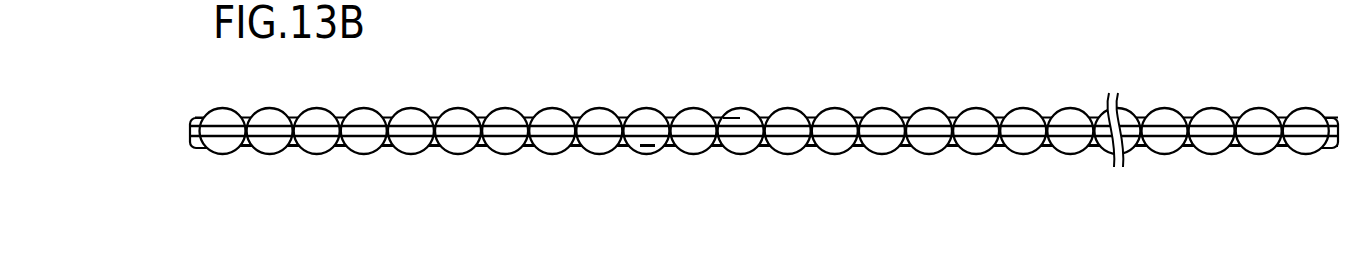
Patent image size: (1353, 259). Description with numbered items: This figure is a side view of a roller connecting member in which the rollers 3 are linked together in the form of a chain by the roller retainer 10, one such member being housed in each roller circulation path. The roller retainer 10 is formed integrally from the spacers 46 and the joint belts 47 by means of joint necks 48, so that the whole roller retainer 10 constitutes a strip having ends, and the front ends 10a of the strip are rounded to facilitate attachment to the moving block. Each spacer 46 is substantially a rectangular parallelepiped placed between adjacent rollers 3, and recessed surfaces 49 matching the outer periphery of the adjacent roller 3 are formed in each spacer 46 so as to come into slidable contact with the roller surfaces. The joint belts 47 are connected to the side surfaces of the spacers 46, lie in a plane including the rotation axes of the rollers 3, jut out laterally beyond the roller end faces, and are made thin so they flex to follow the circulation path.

The roller retainer 10 is at (758, 129).
The front end 10a is at (189, 116).
The roller 3 is at (554, 118).
The spacer 46 is at (482, 120).
The joint belt 47 is at (646, 138).
The joint neck 48 is at (672, 137).
The recessed surface 49 is at (743, 119).